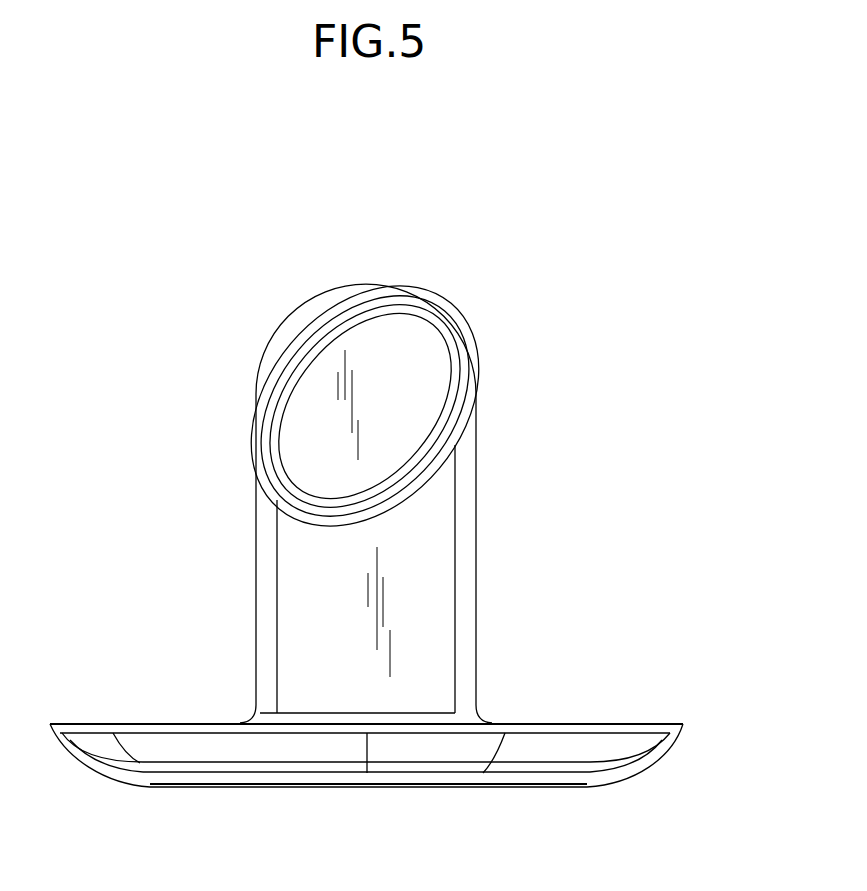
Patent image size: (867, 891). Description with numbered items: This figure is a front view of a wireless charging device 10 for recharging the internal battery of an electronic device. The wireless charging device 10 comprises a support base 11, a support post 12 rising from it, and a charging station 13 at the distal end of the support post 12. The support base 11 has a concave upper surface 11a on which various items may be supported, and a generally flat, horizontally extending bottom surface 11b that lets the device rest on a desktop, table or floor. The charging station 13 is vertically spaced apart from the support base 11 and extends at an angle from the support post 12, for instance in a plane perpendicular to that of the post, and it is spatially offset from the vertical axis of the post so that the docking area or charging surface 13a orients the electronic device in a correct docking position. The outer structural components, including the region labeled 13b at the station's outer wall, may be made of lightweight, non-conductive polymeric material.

The wireless charging device 10 is at (170, 297).
The support base 11 is at (637, 746).
The concave upper surface 11a is at (580, 708).
The bottom surface 11b is at (373, 783).
The support post 12 is at (305, 630).
The charging station 13 is at (243, 429).
The charging surface 13a is at (298, 370).
The tip outer wall 13b is at (485, 370).